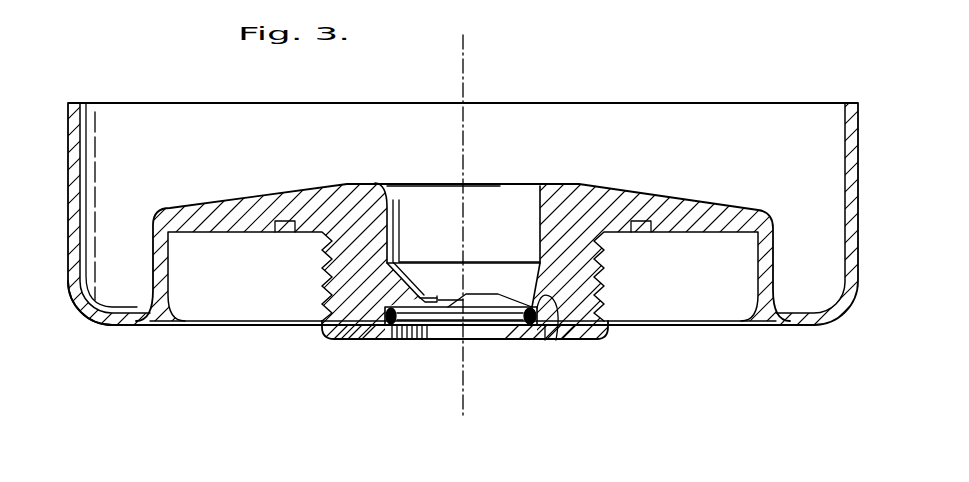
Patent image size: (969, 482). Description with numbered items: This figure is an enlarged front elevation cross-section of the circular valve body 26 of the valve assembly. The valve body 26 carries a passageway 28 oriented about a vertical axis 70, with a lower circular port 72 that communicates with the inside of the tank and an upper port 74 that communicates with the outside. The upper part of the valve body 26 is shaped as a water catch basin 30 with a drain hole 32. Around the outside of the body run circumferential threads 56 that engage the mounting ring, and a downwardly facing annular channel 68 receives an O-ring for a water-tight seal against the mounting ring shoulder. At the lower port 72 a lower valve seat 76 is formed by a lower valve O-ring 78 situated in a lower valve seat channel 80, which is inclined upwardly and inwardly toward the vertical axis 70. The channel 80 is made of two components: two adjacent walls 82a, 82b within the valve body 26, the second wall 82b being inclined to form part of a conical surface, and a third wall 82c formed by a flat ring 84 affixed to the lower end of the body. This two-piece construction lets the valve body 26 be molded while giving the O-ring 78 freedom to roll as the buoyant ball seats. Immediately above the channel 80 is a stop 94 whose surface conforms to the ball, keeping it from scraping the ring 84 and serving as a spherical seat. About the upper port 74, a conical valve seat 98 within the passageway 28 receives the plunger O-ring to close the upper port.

The valve body 26 is at (682, 347).
The passageway 28 is at (430, 289).
The water catch basin 30 is at (68, 222).
The drain hole 32 is at (80, 310).
The valve body circumferential threads 56 is at (320, 283).
The annular channel 68 is at (287, 233).
The vertical axis 70 is at (463, 80).
The lower port 72 is at (433, 339).
The upper port 74 is at (503, 185).
The lower valve seat 76 is at (471, 297).
The lower valve O-ring 78 is at (390, 335).
The lower valve seat channel 80 is at (496, 306).
The first wall 82a is at (557, 332).
The second wall 82b is at (546, 340).
The third wall 82c is at (517, 333).
The flat ring 84 is at (350, 336).
The stop 94 is at (428, 297).
The conical valve seat 98 is at (425, 190).